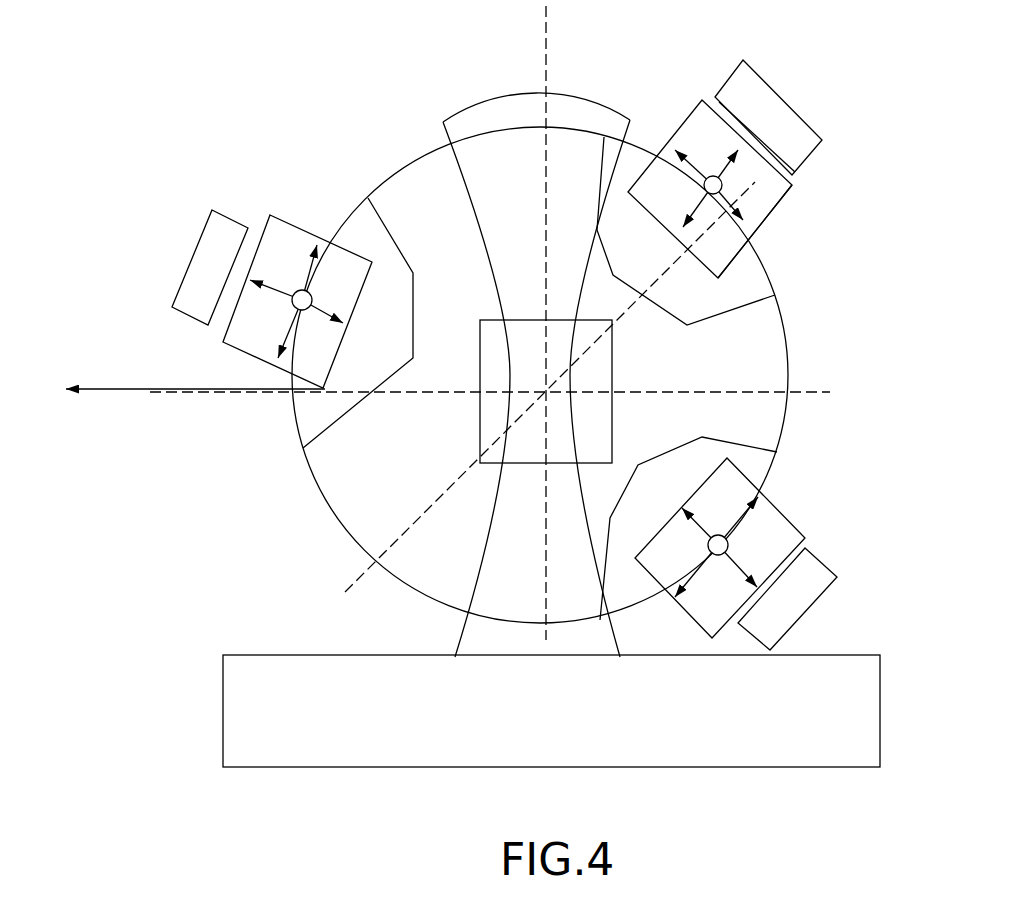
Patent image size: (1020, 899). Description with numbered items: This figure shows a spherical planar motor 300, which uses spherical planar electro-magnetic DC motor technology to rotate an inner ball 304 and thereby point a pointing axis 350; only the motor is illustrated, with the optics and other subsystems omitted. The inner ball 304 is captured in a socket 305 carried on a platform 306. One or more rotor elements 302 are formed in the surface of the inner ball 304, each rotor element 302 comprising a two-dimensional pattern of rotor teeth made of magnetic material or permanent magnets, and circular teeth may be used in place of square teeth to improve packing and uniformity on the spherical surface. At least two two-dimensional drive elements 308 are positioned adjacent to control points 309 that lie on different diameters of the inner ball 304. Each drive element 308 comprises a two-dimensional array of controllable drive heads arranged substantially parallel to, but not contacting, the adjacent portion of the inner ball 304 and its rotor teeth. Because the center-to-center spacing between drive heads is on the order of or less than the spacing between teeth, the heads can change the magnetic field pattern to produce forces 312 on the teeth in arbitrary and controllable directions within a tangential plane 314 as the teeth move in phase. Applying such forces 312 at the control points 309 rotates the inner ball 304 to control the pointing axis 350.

The spherical planar motor 300 is at (90, 148).
The rotor element 302 is at (403, 260).
The inner ball 304 is at (375, 187).
The socket 305 is at (481, 108).
The platform 306 is at (223, 692).
The two-dimensional drive element 308 is at (730, 80).
The control point 309 is at (727, 190).
The forces 312 is at (680, 127).
The tangential plane 314 is at (782, 205).
The pointing axis 350 is at (102, 398).